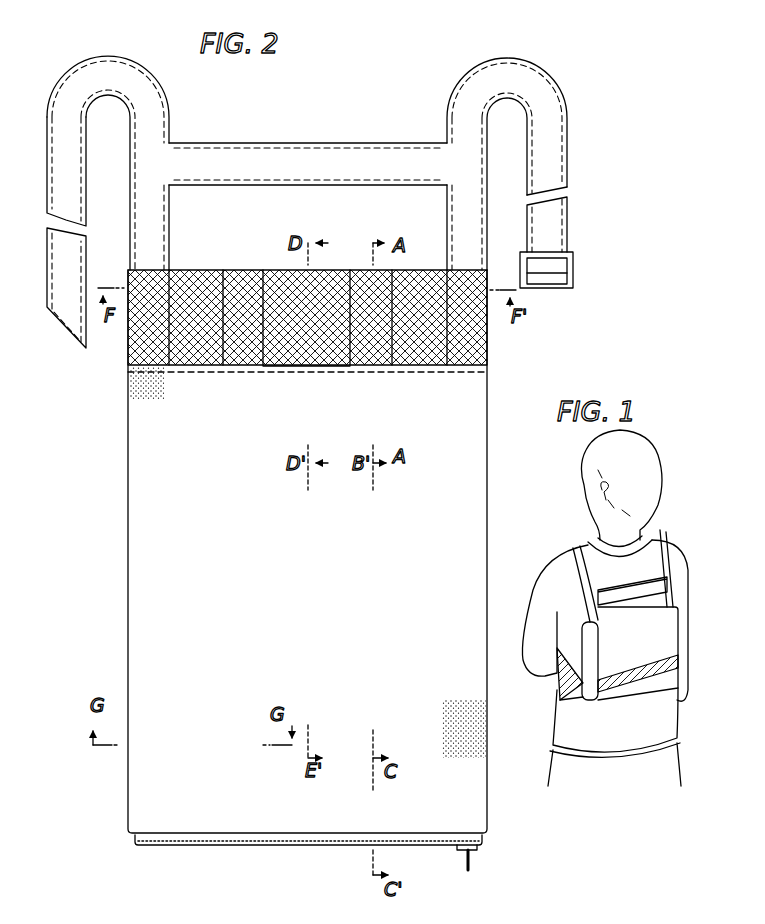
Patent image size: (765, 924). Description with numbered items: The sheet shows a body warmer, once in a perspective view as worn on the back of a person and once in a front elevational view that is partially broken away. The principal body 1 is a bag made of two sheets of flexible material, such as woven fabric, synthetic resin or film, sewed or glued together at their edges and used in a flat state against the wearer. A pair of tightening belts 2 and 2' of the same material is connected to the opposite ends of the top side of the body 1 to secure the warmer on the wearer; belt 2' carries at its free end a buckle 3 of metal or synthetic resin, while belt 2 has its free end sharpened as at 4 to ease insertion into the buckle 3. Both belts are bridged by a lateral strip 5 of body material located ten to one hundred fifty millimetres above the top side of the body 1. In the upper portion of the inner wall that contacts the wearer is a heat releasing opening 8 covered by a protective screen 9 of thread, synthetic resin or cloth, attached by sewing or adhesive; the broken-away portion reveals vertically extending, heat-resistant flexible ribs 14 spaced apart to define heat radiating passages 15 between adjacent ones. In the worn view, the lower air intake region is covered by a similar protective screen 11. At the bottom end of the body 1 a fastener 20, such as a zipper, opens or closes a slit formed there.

In FIG. 2, the principal body 1 is at (130, 606).
In FIG. 1, the principal body 1 is at (675, 642).
In FIG. 2, the tightening belt 2 is at (122, 163).
In FIG. 1, the tightening belt 2 is at (577, 567).
In FIG. 2, the tightening belt 2' is at (482, 164).
In FIG. 1, the tightening belt 2' is at (671, 551).
In FIG. 2, the buckle 3 is at (568, 275).
In FIG. 2, the sharpened free end 4 is at (66, 327).
In FIG. 2, the lateral strip 5 is at (324, 150).
In FIG. 1, the lateral strip 5 is at (600, 588).
In FIG. 2, the heat releasing opening 8 is at (333, 288).
In FIG. 2, the protective screen 9 is at (290, 350).
In FIG. 1, the protective screen 11 is at (680, 672).
In FIG. 2, the ribs 14 is at (233, 366).
In FIG. 2, the heat radiating passage 15 is at (200, 300).
In FIG. 2, the fastener 20 is at (262, 845).